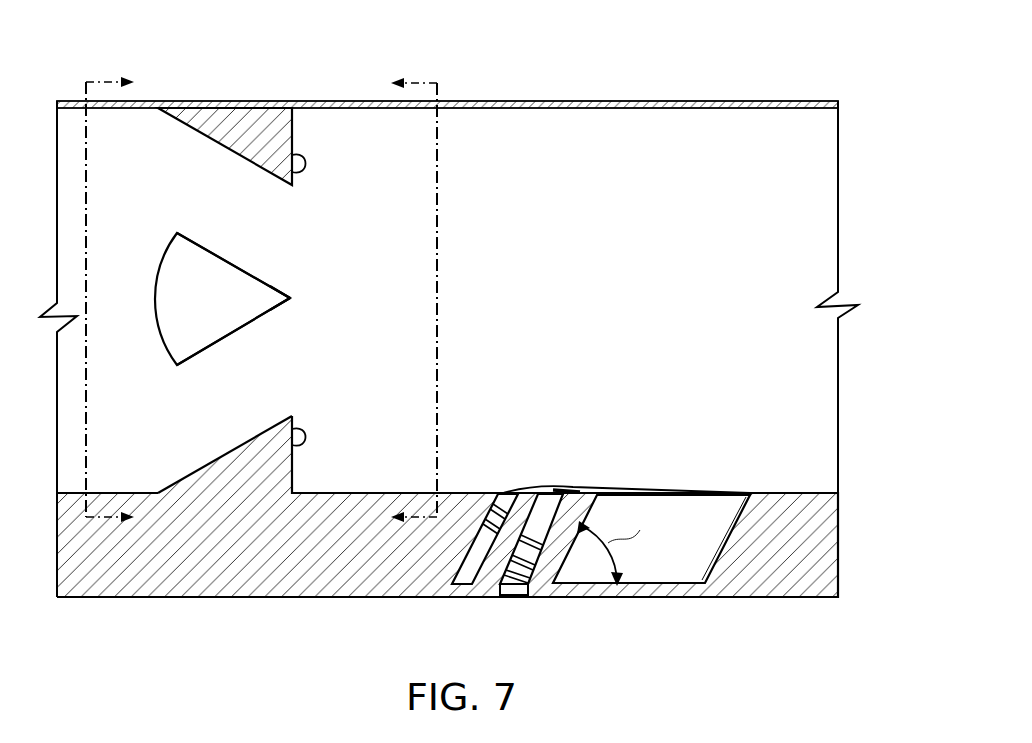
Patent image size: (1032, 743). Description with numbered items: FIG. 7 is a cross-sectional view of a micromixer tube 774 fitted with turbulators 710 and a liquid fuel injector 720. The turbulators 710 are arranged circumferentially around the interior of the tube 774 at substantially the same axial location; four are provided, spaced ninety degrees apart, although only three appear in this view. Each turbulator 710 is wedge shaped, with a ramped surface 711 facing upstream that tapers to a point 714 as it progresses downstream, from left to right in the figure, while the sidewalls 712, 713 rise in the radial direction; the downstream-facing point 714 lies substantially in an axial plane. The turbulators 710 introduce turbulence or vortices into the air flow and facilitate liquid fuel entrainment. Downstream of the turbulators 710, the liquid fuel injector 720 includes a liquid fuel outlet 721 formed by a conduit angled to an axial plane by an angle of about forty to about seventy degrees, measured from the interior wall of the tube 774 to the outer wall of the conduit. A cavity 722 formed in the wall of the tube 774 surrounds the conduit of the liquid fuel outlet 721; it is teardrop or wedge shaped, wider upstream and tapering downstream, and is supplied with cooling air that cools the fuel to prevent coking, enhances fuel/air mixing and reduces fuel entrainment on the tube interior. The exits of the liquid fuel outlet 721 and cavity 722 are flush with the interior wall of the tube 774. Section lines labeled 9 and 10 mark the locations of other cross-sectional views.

The turbulator 710 is at (268, 137).
The ramped surface 711 is at (197, 468).
The sidewall 712 is at (265, 318).
The sidewall 713 is at (237, 262).
The point 714 is at (295, 298).
The liquid fuel injector 720 is at (633, 420).
The liquid fuel outlet 721 is at (553, 507).
The cavity 722 is at (690, 512).
The micromixer tube 774 is at (818, 218).
The section line 9 is at (119, 302).
The section line 10 is at (397, 302).